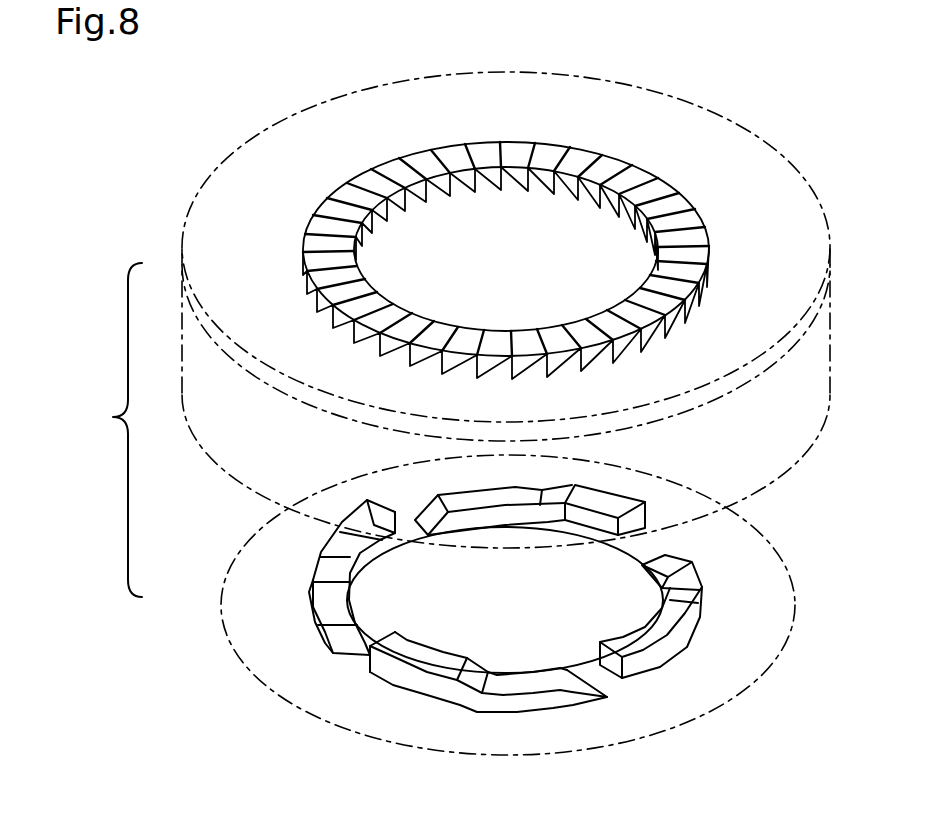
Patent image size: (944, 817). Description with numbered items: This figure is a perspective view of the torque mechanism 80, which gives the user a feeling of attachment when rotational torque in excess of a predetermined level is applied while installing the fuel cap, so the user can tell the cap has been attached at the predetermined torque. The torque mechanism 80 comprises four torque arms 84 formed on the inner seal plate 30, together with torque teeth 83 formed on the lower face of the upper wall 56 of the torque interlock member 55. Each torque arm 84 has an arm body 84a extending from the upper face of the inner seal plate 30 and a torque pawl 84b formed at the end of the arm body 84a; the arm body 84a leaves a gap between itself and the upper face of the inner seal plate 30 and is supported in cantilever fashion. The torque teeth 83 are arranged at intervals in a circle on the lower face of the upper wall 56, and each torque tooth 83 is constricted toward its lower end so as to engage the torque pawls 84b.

The inner seal plate 30 is at (778, 623).
The torque interlock member 55 is at (770, 152).
The upper wall 56 is at (660, 107).
The torque mechanism 80 is at (108, 430).
The torque teeth 83 is at (457, 155).
The torque arm 84 is at (530, 488).
The arm body 84a is at (613, 503).
The torque pawl 84b is at (646, 510).